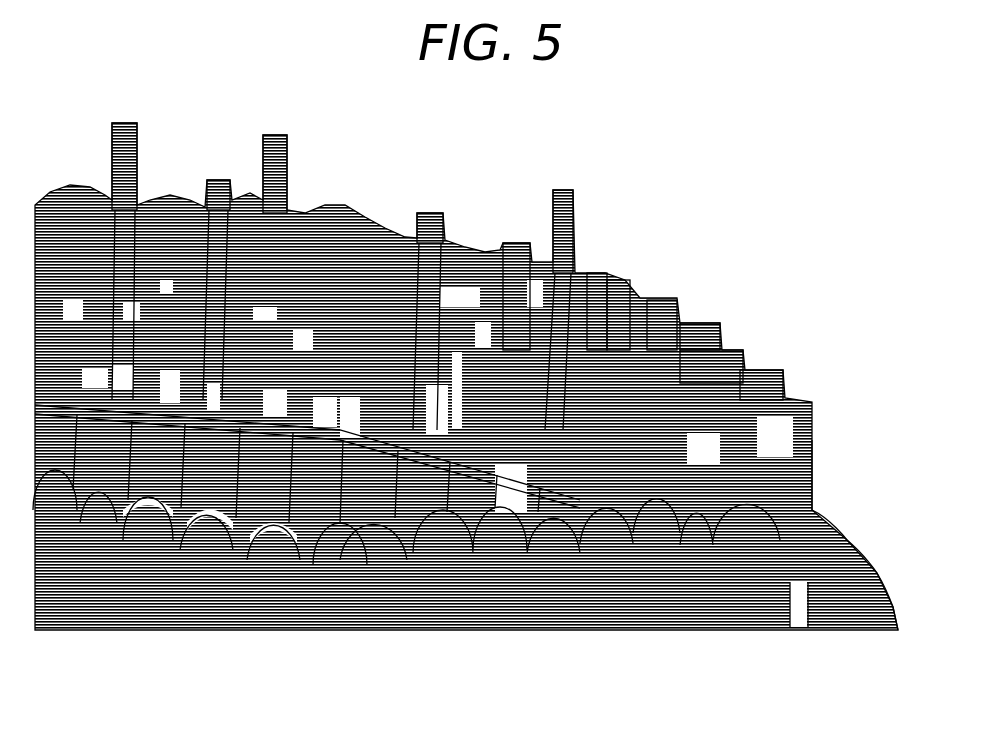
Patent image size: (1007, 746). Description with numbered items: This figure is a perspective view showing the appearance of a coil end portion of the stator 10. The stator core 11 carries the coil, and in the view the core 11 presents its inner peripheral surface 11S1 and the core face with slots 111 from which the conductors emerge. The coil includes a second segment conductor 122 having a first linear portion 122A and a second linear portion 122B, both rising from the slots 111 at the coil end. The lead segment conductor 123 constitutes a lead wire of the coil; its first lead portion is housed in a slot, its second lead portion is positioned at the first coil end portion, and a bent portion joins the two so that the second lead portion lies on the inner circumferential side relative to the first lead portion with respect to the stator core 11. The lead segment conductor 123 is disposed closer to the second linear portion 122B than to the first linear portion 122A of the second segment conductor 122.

The stator 10 is at (788, 232).
The stator core 11 is at (843, 537).
The inner peripheral surface of stator core 11S1 is at (870, 612).
The slot / core face 111 is at (372, 497).
The second segment conductor 122 is at (487, 325).
The first linear portion 122A is at (105, 395).
The second linear portion 122B is at (522, 437).
The lead segment conductor 123 is at (405, 347).